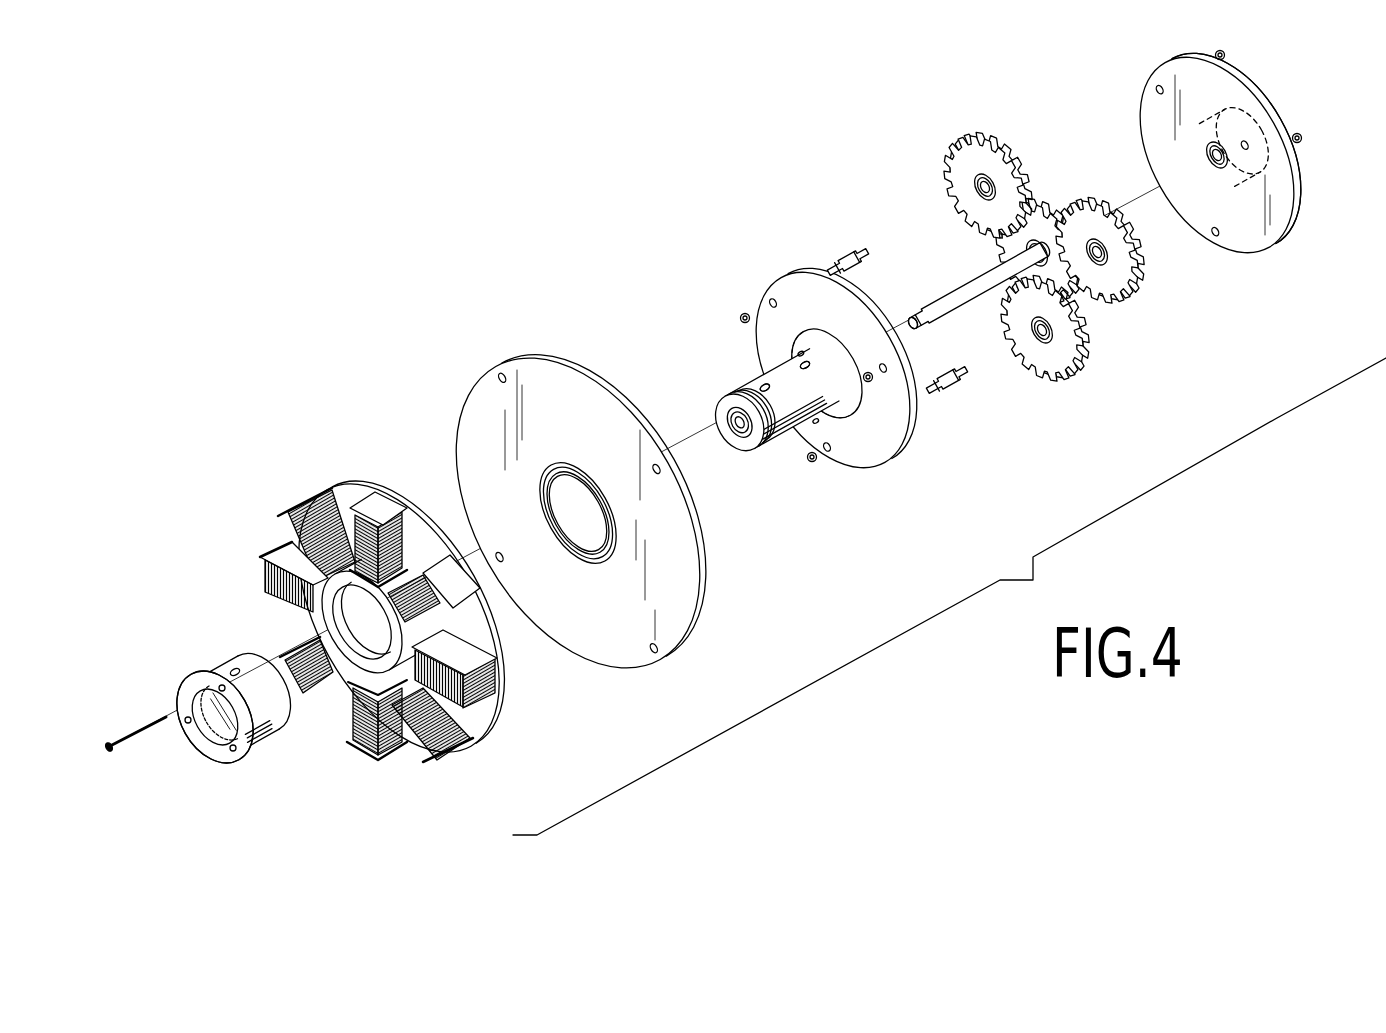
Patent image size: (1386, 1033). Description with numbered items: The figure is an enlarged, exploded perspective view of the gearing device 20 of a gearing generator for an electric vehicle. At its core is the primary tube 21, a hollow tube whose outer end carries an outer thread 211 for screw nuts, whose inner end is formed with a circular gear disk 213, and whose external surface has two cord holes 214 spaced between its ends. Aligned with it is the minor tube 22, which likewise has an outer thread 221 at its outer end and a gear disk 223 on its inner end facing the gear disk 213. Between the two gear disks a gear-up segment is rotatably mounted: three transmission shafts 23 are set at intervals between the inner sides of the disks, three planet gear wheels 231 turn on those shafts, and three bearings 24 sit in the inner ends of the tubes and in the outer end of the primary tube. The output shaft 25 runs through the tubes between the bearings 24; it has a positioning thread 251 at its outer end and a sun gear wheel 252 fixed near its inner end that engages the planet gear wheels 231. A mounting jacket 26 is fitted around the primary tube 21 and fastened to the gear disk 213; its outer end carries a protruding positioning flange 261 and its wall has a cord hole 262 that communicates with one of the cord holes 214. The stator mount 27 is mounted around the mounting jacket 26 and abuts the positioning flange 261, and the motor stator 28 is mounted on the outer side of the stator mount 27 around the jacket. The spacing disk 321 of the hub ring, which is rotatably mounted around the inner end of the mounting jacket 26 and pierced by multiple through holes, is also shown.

The gearing device 20 is at (640, 226).
The primary tube 21 is at (780, 422).
The outer thread 211 is at (762, 437).
The gear disk 213 is at (882, 453).
The cord holes 214 is at (800, 366).
The minor tube 22 is at (1255, 162).
The outer thread 221 is at (1280, 122).
The gear disk 223 is at (1280, 222).
The transmission shafts 23 is at (838, 259).
The bearings 24 is at (740, 432).
The output shaft 25 is at (947, 300).
The positioning thread 251 is at (927, 326).
The sun gear wheel 252 is at (1012, 243).
The planet gear wheels 231 is at (950, 157).
The mounting jacket 26 is at (270, 745).
The positioning flange 261 is at (192, 687).
The cord hole 262 is at (230, 664).
The stator mount 27 is at (482, 716).
The motor stator 28 is at (455, 746).
The spacing disk 321 is at (682, 621).